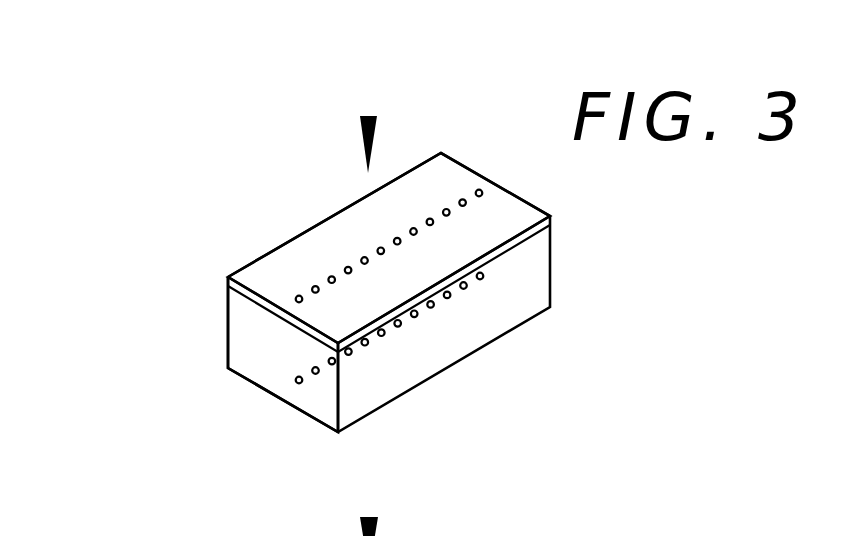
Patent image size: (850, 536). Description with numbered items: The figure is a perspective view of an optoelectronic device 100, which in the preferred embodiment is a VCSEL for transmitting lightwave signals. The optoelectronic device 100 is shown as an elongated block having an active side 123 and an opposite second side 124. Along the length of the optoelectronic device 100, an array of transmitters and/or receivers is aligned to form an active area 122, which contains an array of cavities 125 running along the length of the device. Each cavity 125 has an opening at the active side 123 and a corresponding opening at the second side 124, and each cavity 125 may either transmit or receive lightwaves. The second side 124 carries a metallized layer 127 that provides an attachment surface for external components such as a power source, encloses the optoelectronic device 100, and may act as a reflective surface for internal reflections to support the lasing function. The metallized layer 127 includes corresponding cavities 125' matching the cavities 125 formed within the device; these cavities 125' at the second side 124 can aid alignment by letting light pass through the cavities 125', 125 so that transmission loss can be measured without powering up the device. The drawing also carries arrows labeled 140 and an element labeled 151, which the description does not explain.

The optoelectronic device 100 is at (368, 117).
The active area 122 is at (323, 383).
The active side 123 is at (255, 373).
The second side 124 is at (507, 218).
The cavities 125 is at (307, 343).
The corresponding cavities 125' is at (366, 218).
The metallized layer 127 is at (532, 240).
The output direction arrow 140 is at (368, 517).
The element 151 is at (507, 535).